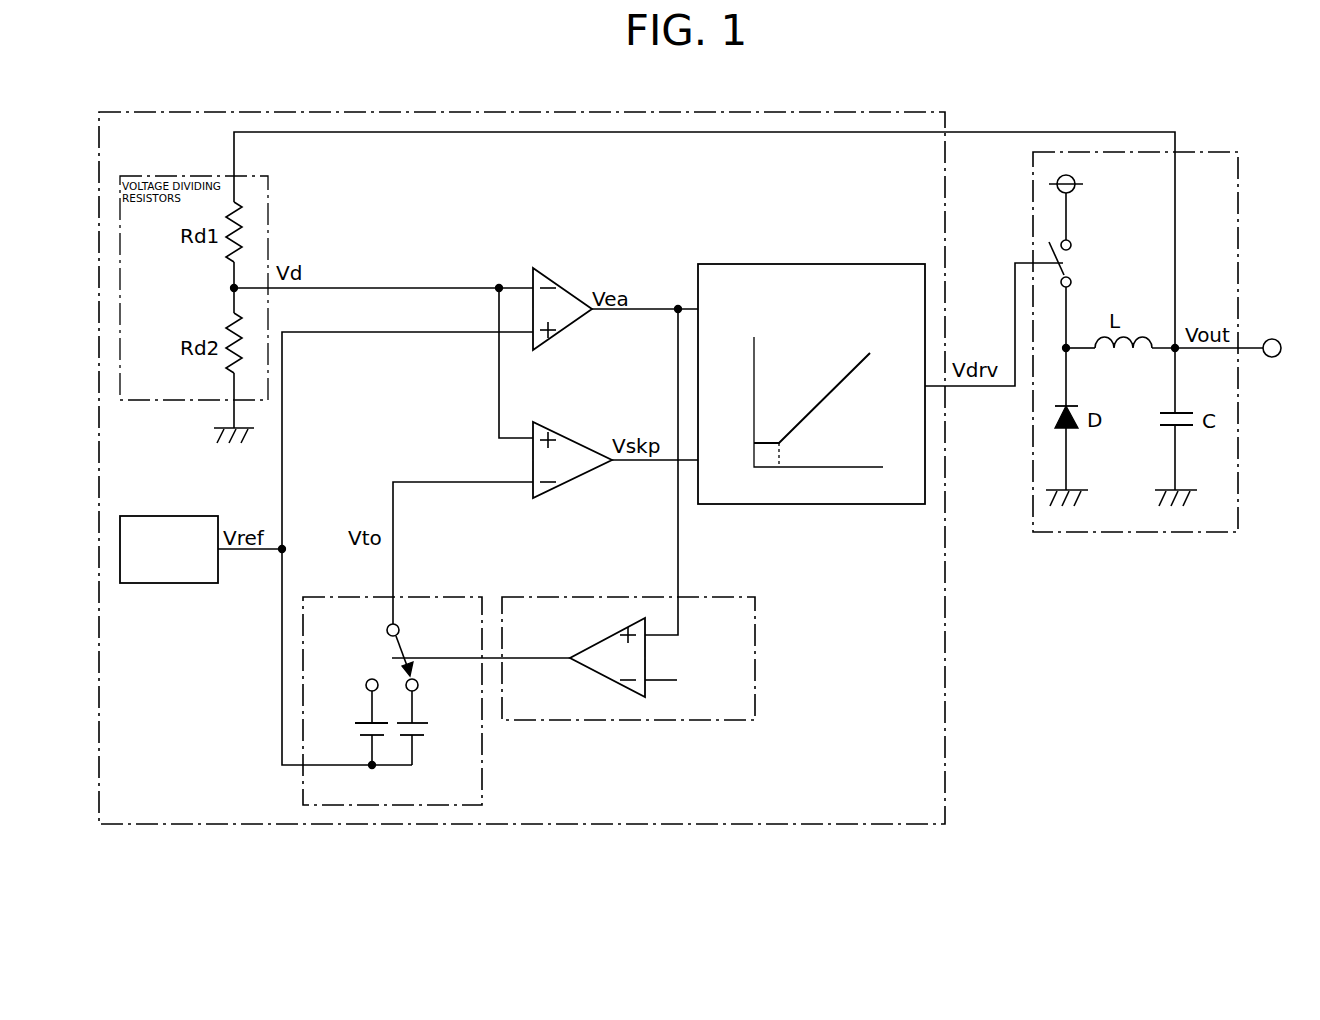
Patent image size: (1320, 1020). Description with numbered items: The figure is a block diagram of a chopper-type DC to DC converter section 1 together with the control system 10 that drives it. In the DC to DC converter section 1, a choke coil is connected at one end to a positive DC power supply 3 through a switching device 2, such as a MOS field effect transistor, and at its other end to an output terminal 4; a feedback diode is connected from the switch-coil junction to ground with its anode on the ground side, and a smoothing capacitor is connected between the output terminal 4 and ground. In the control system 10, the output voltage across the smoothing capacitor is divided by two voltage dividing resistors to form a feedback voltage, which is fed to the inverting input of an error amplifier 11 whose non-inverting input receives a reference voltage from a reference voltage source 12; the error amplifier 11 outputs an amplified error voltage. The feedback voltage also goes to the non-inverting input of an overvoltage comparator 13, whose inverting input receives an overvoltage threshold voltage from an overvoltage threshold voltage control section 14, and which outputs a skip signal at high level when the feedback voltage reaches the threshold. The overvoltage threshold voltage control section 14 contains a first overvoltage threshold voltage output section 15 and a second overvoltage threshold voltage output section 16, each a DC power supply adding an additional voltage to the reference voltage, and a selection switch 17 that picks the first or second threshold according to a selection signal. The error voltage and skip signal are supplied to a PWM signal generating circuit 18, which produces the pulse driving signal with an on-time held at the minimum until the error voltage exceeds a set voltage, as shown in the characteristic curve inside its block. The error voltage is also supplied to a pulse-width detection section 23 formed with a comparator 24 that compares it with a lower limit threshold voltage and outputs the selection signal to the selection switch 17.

The DC to DC converter section 1 is at (1217, 152).
The switching device 2 is at (1068, 270).
The positive DC power supply 3 is at (1077, 178).
The output terminal 4 is at (1272, 338).
The control system 10 is at (945, 689).
The error amplifier 11 is at (578, 335).
The reference voltage source 12 is at (182, 585).
The overvoltage comparator 13 is at (578, 483).
The overvoltage threshold voltage control section 14 is at (440, 597).
The first overvoltage threshold voltage output section 15 is at (360, 740).
The second overvoltage threshold voltage output section 16 is at (418, 740).
The selection switch 17 is at (400, 637).
The pulse-width modulation signal generating circuit 18 is at (826, 263).
The pulse-width detection section 23 is at (543, 597).
The comparator 24 is at (610, 681).